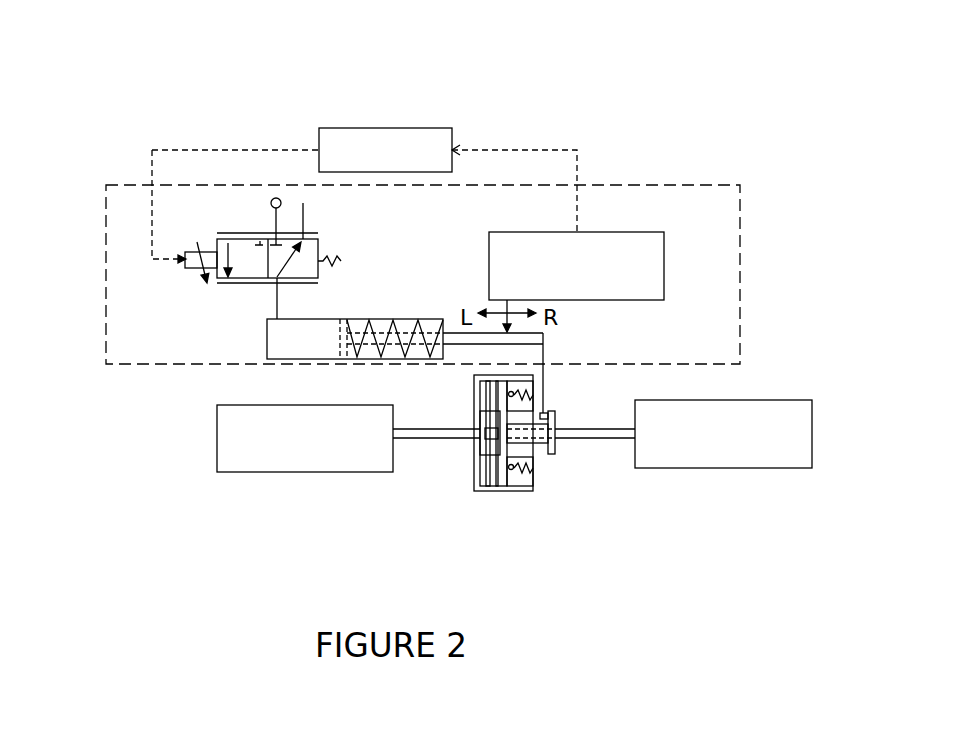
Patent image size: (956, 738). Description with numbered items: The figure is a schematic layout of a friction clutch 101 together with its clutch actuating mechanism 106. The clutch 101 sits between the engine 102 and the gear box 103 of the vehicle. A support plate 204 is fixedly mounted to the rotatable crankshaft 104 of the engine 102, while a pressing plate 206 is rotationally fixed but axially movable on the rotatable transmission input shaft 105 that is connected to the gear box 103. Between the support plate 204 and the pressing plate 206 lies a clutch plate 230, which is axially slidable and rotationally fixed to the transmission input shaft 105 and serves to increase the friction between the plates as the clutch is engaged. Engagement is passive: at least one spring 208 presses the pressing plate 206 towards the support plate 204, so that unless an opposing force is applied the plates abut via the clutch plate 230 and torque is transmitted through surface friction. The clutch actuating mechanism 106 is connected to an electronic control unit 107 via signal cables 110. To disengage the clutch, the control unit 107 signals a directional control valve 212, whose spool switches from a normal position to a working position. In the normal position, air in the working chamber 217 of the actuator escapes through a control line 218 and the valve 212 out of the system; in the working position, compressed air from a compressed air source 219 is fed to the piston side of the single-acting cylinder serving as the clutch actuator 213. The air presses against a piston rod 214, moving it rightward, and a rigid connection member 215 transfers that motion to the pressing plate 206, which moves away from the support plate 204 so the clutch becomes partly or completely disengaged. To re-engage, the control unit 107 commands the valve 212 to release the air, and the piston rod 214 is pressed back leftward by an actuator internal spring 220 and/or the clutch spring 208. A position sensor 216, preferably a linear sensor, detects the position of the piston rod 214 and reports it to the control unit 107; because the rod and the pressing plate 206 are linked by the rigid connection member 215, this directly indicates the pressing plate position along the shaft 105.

The friction clutch 101 is at (488, 497).
The engine 102 is at (305, 438).
The gear box 103 is at (723, 434).
The crankshaft 104 is at (420, 435).
The transmission input shaft 105 is at (595, 433).
The clutch actuating mechanism 106 is at (648, 185).
The electronic control unit 107 is at (385, 150).
The signal cables 110 is at (510, 148).
The support plate 204 is at (477, 472).
The pressing plate 206 is at (540, 385).
The spring 208 is at (537, 477).
The directional control valve 212 is at (200, 294).
The clutch actuator 213 is at (267, 352).
The piston rod 214 is at (478, 338).
The connection member 215 is at (545, 353).
The position sensor 216 is at (576, 266).
The working chamber 217 is at (287, 333).
The control line 218 is at (277, 279).
The compressed air source 219 is at (271, 200).
The actuator internal spring 220 is at (415, 320).
The clutch plate 230 is at (490, 482).